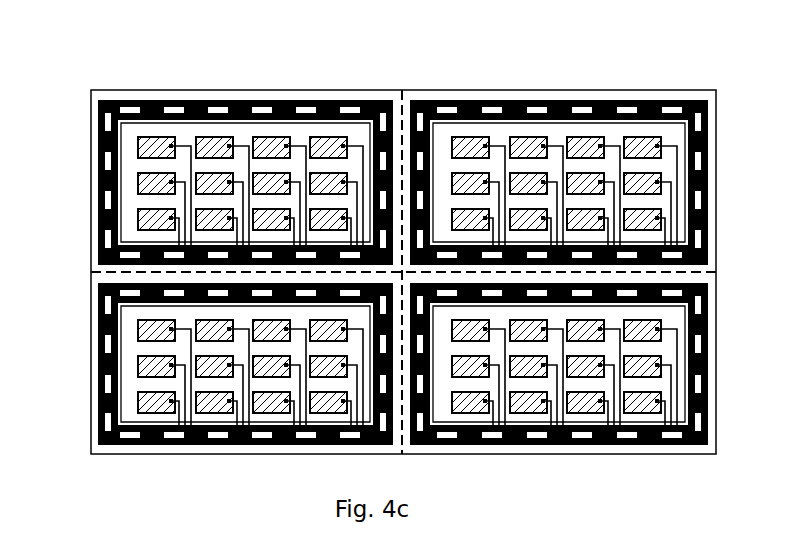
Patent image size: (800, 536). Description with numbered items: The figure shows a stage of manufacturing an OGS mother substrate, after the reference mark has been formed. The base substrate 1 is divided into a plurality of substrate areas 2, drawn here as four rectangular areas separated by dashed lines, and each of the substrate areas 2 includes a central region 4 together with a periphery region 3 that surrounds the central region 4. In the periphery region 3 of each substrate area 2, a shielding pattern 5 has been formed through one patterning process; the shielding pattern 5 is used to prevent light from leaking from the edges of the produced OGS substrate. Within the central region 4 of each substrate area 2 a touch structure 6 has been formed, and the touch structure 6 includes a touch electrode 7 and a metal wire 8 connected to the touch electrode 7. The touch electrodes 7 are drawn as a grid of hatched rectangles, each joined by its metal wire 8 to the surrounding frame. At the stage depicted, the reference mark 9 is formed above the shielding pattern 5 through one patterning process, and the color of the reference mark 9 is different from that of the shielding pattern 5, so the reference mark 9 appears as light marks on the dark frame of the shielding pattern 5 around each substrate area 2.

The base substrate 1 is at (734, 150).
The substrate area 2 is at (387, 45).
The periphery region 3 is at (296, 100).
The central region 4 is at (340, 130).
The shielding pattern 5 is at (157, 86).
The touch structure 6 is at (42, 142).
The touch electrode 7 is at (123, 176).
The metal wire 8 is at (169, 203).
The reference mark 9 is at (84, 111).